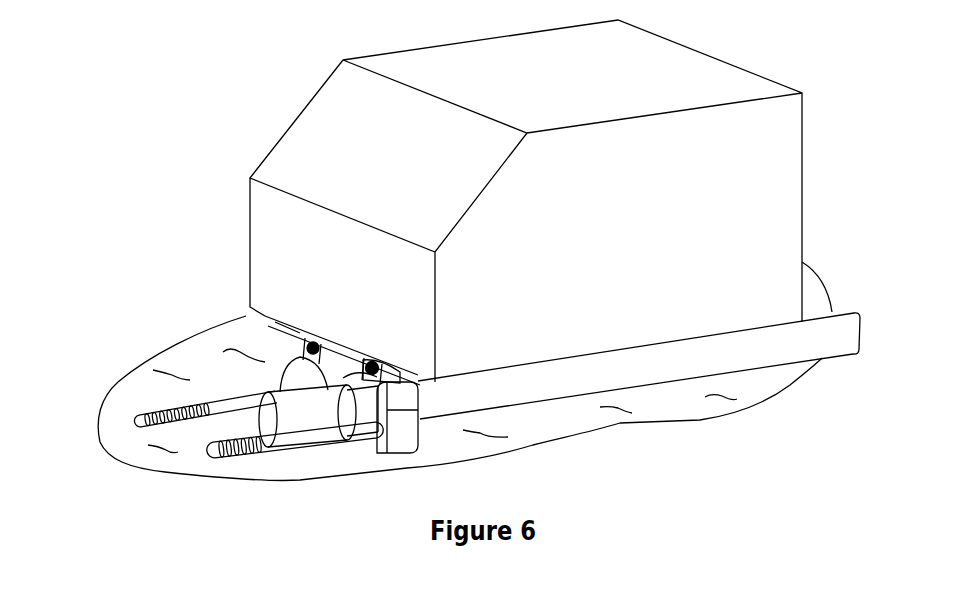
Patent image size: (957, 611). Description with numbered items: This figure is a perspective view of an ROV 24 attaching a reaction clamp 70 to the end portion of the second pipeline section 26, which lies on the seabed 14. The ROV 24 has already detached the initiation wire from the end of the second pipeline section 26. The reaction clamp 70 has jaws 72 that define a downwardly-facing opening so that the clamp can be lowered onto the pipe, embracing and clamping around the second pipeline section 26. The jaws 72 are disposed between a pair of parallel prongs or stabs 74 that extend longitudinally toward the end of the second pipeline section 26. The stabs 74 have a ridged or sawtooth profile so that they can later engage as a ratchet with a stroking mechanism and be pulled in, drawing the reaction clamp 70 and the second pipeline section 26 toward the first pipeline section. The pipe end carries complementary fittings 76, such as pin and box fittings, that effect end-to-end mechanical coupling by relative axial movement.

The seabed 14 is at (133, 453).
The ROV 24 is at (430, 57).
The second pipeline section 26 is at (613, 362).
The reaction clamp 70 is at (397, 437).
The jaws 72 is at (337, 350).
The stabs 74 is at (165, 410).
The complementary fittings 76 is at (277, 397).